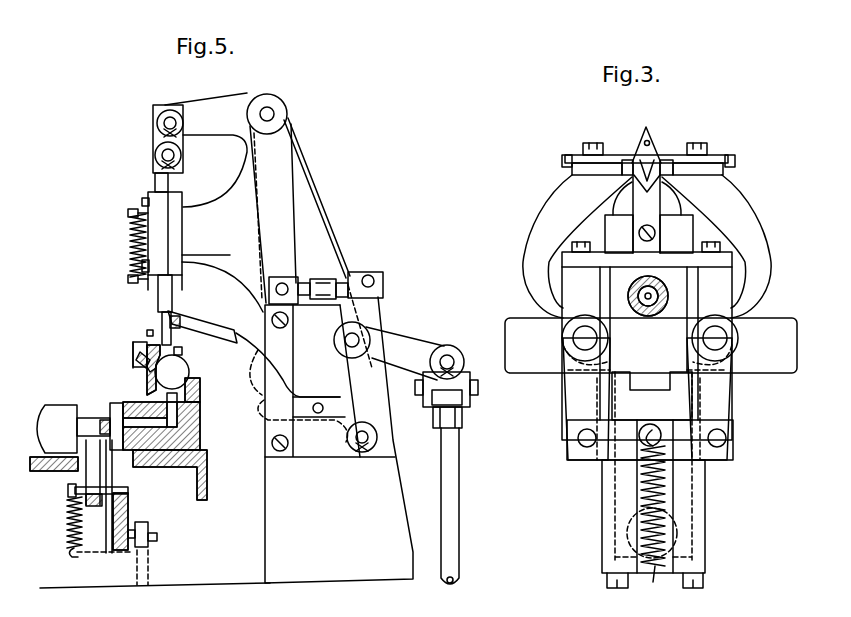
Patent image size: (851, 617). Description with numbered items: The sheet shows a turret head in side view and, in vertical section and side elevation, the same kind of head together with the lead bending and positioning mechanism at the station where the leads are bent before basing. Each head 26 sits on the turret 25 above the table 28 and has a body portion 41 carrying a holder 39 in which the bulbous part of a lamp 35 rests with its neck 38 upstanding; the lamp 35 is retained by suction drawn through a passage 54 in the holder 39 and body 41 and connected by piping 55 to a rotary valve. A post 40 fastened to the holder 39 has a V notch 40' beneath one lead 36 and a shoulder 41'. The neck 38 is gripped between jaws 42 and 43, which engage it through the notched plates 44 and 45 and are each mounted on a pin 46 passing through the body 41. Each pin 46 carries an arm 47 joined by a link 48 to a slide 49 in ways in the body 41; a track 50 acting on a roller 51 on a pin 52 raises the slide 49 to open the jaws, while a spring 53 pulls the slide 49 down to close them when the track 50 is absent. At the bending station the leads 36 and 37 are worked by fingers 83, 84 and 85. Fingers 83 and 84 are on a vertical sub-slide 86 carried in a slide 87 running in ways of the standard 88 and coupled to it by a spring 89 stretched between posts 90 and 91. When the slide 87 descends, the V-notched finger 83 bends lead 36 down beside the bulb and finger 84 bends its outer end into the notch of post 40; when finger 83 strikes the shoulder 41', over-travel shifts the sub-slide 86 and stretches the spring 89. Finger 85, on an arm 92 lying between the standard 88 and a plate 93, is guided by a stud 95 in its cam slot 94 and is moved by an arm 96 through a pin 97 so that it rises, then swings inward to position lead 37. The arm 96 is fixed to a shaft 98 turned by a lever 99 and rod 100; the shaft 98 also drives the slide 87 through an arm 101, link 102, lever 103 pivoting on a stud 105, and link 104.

In FIG. 5, the turret 25 is at (208, 480).
In FIG. 5, the head 26 is at (98, 365).
In FIG. 3, the head 26 is at (531, 200).
In FIG. 5, the table 28 is at (231, 584).
In FIG. 5, the lamp 35 is at (190, 372).
In FIG. 3, the lamp 35 is at (663, 196).
In FIG. 5, the lead 36 is at (138, 363).
In FIG. 3, the lead 36 is at (655, 150).
In FIG. 5, the lead 37 is at (173, 304).
In FIG. 5, the lamp neck 38 is at (182, 352).
In FIG. 3, the lamp neck 38 is at (641, 150).
In FIG. 5, the holder 39 is at (201, 396).
In FIG. 3, the holder 39 is at (605, 231).
In FIG. 5, the post 40 is at (131, 373).
In FIG. 3, the post 40 is at (586, 187).
In FIG. 5, the V notch 40' is at (125, 352).
In FIG. 3, the V notch 40' is at (715, 173).
In FIG. 5, the body portion 41 is at (173, 426).
In FIG. 3, the body portion 41 is at (644, 346).
In FIG. 5, the shoulder 41' is at (130, 375).
In FIG. 3, the jaw 42 is at (534, 228).
In FIG. 3, the jaw 43 is at (769, 236).
In FIG. 3, the plate 44 is at (625, 162).
In FIG. 3, the plate 45 is at (670, 162).
In FIG. 3, the pin 46 is at (578, 348).
In FIG. 5, the arm 47 is at (85, 479).
In FIG. 3, the arm 47 is at (565, 412).
In FIG. 5, the link 48 is at (101, 505).
In FIG. 3, the link 48 is at (603, 462).
In FIG. 5, the slide 49 is at (129, 505).
In FIG. 3, the slide 49 is at (650, 390).
In FIG. 5, the track 50 is at (150, 572).
In FIG. 3, the track 50 is at (615, 512).
In FIG. 5, the roller 51 is at (148, 528).
In FIG. 3, the roller 51 is at (678, 534).
In FIG. 5, the pin 52 is at (158, 537).
In FIG. 5, the spring 53 is at (67, 531).
In FIG. 3, the spring 53 is at (666, 502).
In FIG. 5, the passage 54 is at (178, 418).
In FIG. 3, the passage 54 is at (654, 302).
In FIG. 5, the piping 55 is at (86, 415).
In FIG. 3, the piping 55 is at (644, 316).
In FIG. 5, the finger 83 is at (148, 333).
In FIG. 5, the finger 84 is at (138, 341).
In FIG. 5, the finger 85 is at (204, 318).
In FIG. 5, the sub-slide 86 is at (150, 301).
In FIG. 5, the slide 87 is at (148, 182).
In FIG. 5, the standard 88 is at (210, 198).
In FIG. 5, the spring 89 is at (128, 247).
In FIG. 5, the post 90 is at (128, 281).
In FIG. 5, the post 91 is at (128, 212).
In FIG. 5, the arm 92 is at (295, 393).
In FIG. 5, the plate 93 is at (265, 441).
In FIG. 5, the cam slot 94 is at (304, 426).
In FIG. 5, the stud 95 is at (321, 415).
In FIG. 5, the arm 96 is at (372, 394).
In FIG. 5, the pin 97 is at (360, 452).
In FIG. 5, the shaft 98 is at (360, 339).
In FIG. 5, the lever 99 is at (432, 343).
In FIG. 5, the rod 100 is at (460, 514).
In FIG. 5, the arm 101 is at (384, 302).
In FIG. 5, the link 102 is at (338, 276).
In FIG. 5, the lever 103 is at (294, 163).
In FIG. 5, the link 104 is at (153, 130).
In FIG. 5, the stud 105 is at (273, 113).